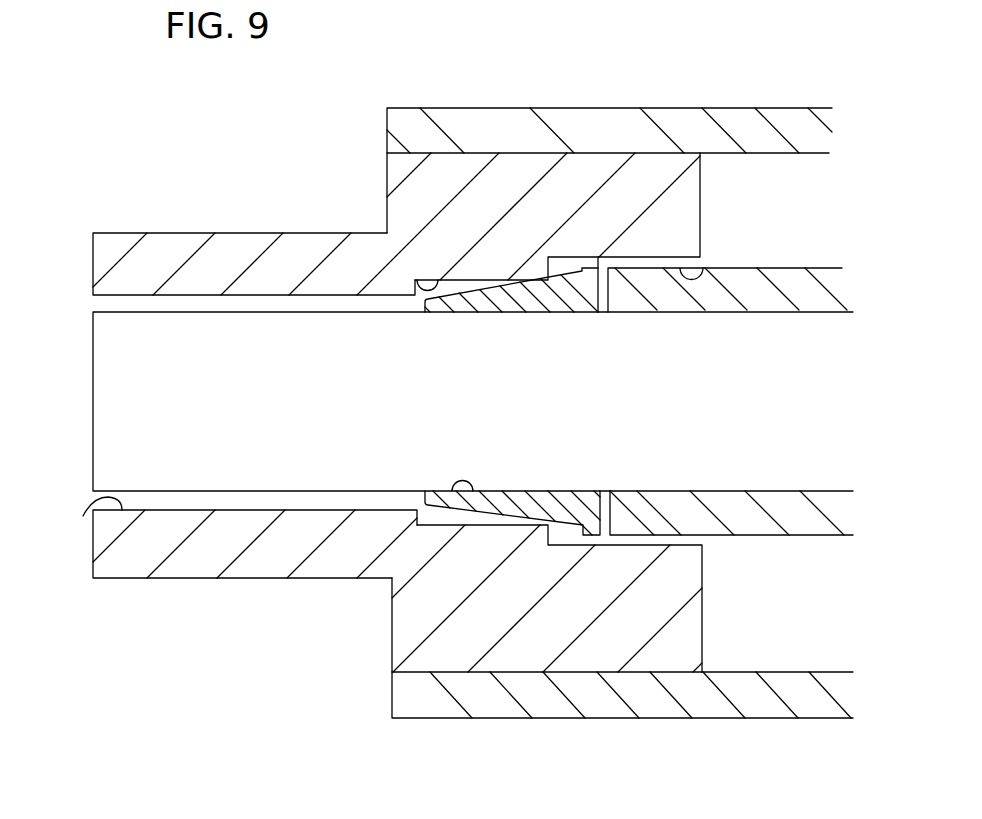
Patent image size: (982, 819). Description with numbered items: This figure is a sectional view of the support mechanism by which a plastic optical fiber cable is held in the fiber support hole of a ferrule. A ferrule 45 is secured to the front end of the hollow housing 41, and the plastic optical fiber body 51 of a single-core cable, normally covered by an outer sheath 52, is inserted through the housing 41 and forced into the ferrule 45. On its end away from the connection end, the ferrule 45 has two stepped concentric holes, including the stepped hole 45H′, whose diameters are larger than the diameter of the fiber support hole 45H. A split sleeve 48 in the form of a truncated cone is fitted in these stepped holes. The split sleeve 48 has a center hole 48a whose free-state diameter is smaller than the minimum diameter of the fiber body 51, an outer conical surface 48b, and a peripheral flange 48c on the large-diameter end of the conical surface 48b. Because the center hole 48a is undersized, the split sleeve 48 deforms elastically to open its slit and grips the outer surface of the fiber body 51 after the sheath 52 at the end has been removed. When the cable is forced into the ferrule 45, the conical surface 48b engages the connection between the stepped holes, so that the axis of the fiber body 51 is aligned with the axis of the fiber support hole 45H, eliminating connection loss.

The hollow housing 41 is at (732, 120).
The ferrule 45 is at (310, 566).
The fiber support hole 45H is at (85, 522).
The stepped hole 45H′ is at (412, 278).
The split sleeve 48 is at (518, 510).
The center hole 48a is at (462, 527).
The conical surface 48b is at (487, 292).
The peripheral flange 48c is at (593, 272).
The plastic optical fiber body 51 is at (112, 398).
The outer sheath 52 is at (793, 278).